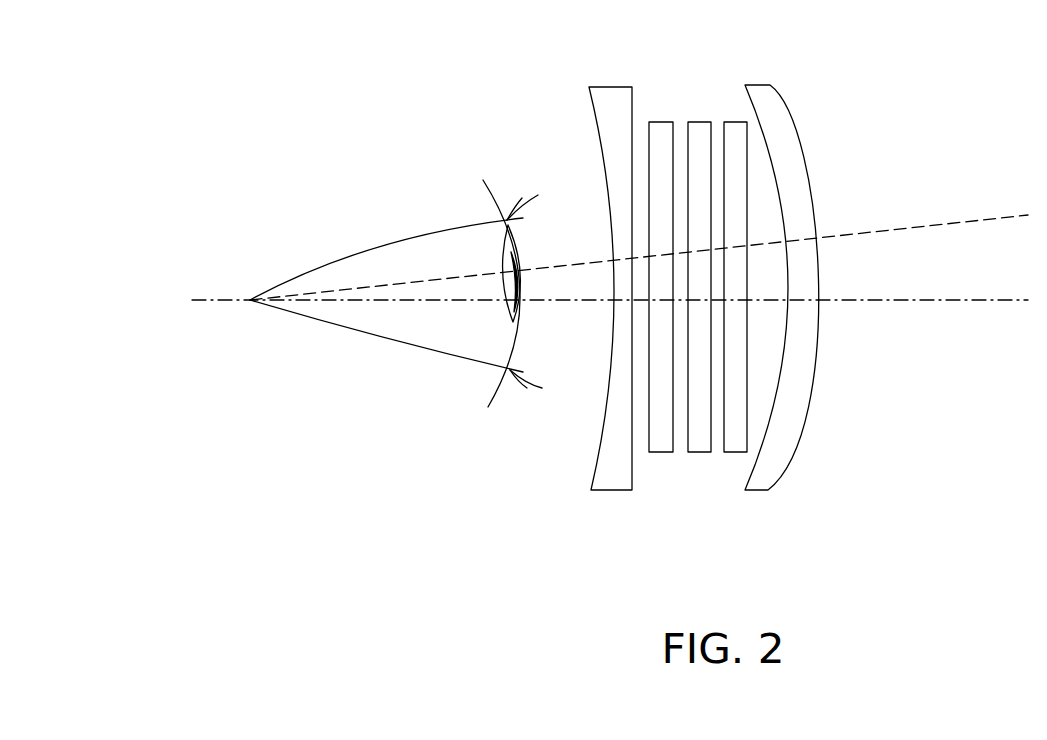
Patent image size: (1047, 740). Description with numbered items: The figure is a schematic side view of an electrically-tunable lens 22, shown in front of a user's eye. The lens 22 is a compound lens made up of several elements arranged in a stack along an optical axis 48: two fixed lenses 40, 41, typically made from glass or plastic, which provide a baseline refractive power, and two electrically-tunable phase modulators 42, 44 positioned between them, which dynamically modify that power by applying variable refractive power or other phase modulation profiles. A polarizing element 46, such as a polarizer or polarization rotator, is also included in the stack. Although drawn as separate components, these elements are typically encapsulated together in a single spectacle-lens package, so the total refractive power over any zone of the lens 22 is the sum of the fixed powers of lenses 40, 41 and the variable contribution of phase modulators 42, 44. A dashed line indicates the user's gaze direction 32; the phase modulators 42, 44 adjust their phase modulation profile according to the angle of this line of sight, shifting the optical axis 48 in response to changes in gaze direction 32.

The electrically-tunable lens 22 is at (702, 293).
The gaze direction 32 is at (965, 222).
The fixed lens 40 is at (768, 85).
The fixed lens 41 is at (600, 87).
The electrically-tunable phase modulator 42 is at (697, 122).
The electrically-tunable phase modulator 44 is at (660, 122).
The polarizing element 46 is at (738, 122).
The optical axis 48 is at (933, 301).